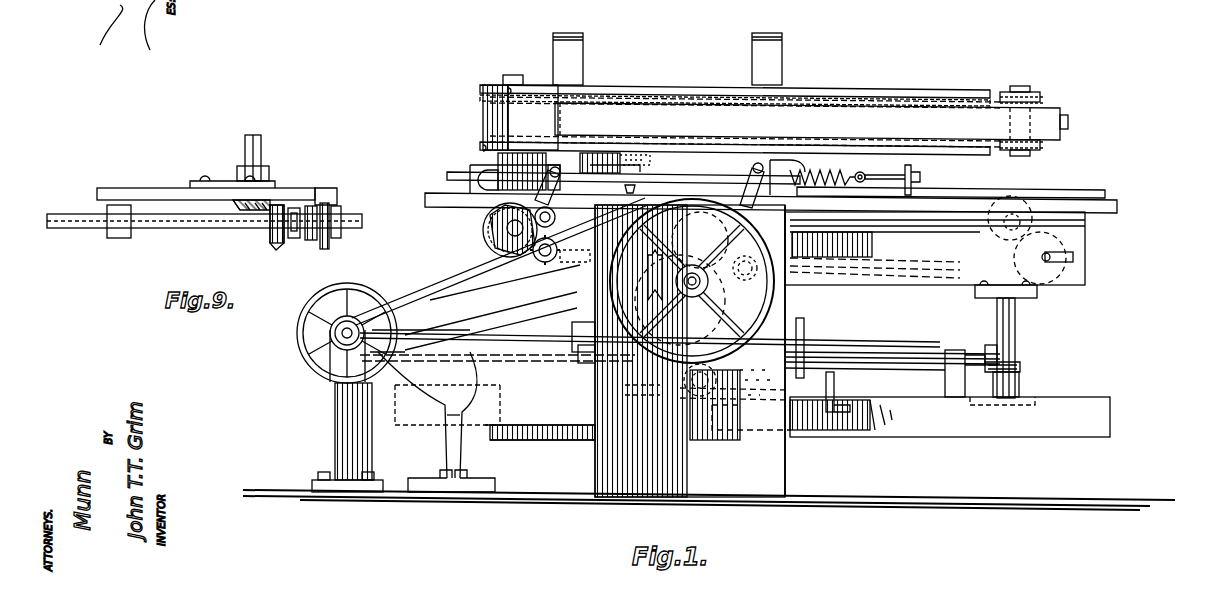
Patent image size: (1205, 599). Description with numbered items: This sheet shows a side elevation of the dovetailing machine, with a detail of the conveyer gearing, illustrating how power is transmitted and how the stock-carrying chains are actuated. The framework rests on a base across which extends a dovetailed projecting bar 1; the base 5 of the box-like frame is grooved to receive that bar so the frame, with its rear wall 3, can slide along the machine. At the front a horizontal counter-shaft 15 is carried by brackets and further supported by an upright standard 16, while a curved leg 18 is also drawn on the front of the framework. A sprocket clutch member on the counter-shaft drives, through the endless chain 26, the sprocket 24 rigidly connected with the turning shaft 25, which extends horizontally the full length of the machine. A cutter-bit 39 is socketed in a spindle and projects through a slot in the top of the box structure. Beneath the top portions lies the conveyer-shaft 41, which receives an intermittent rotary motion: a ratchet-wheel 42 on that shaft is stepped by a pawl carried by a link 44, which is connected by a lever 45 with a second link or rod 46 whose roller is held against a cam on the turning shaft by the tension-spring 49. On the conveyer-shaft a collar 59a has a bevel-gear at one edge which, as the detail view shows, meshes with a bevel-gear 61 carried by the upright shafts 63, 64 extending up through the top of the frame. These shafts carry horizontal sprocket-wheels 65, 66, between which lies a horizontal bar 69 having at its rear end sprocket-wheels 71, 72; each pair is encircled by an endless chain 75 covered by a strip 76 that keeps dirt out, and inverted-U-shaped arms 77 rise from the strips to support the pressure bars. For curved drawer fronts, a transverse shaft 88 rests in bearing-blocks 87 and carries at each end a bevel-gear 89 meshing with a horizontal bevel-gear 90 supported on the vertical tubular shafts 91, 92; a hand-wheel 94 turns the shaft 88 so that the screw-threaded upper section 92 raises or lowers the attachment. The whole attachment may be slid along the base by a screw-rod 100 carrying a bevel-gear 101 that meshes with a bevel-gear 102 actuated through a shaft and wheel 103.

In FIG. 1, the dovetailed projecting bar 1 is at (585, 450).
In FIG. 1, the rear wall 3 is at (790, 462).
In FIG. 1, the base of frame or box portion 5 is at (740, 428).
In FIG. 1, the counter-shaft 15 is at (312, 338).
In FIG. 1, the upright standard 16 is at (335, 428).
In FIG. 1, the curved leg 18 is at (418, 402).
In FIG. 1, the sprocket 24 is at (775, 297).
In FIG. 1, the turning shaft 25 is at (698, 284).
In FIG. 1, the endless chain 26 is at (470, 272).
In FIG. 1, the cutter-bit 39 is at (630, 185).
In FIG. 1, the conveyer-shaft 41 is at (505, 268).
In FIG. 1, the ratchet-wheel 42 is at (528, 232).
In FIG. 1, the link 44 is at (487, 214).
In FIG. 1, the lever 45 is at (700, 172).
In FIG. 1, the second link or rod 46 is at (755, 205).
In FIG. 1, the tension-spring 49 is at (810, 172).
In FIG. 9, the collar 59a is at (283, 243).
In FIG. 9, the bevel-gear 61 is at (243, 210).
In FIG. 9, the upright shaft 63 is at (262, 155).
In FIG. 1, the upright shaft 64 is at (498, 160).
In FIG. 1, the sprocket-wheel 65 is at (485, 140).
In FIG. 1, the sprocket-wheel 66 is at (485, 86).
In FIG. 1, the horizontally-disposed bar 69 is at (666, 112).
In FIG. 1, the sprocket-wheel 71 is at (1040, 96).
In FIG. 1, the sprocket-wheel 72 is at (1042, 150).
In FIG. 1, the endless chain 75 is at (848, 100).
In FIG. 1, the strip 76 is at (640, 85).
In FIG. 1, the inverted-U-shaped arm 77 is at (583, 54).
In FIG. 1, the bearing-block 87 is at (954, 350).
In FIG. 1, the shaft 88 is at (900, 358).
In FIG. 1, the bevel-gear 89 is at (992, 345).
In FIG. 1, the bevel-gear 90 is at (1020, 366).
In FIG. 1, the vertical tubular shaft 91 is at (1019, 384).
In FIG. 1, the upper tubular shaft section 92 is at (1015, 330).
In FIG. 1, the hand-wheel 94 is at (806, 330).
In FIG. 1, the screw-rod 100 is at (593, 481).
In FIG. 1, the bevel-gear 101 is at (643, 389).
In FIG. 1, the bevel-gear 102 is at (712, 380).
In FIG. 1, the shaft and wheel 103 is at (836, 384).